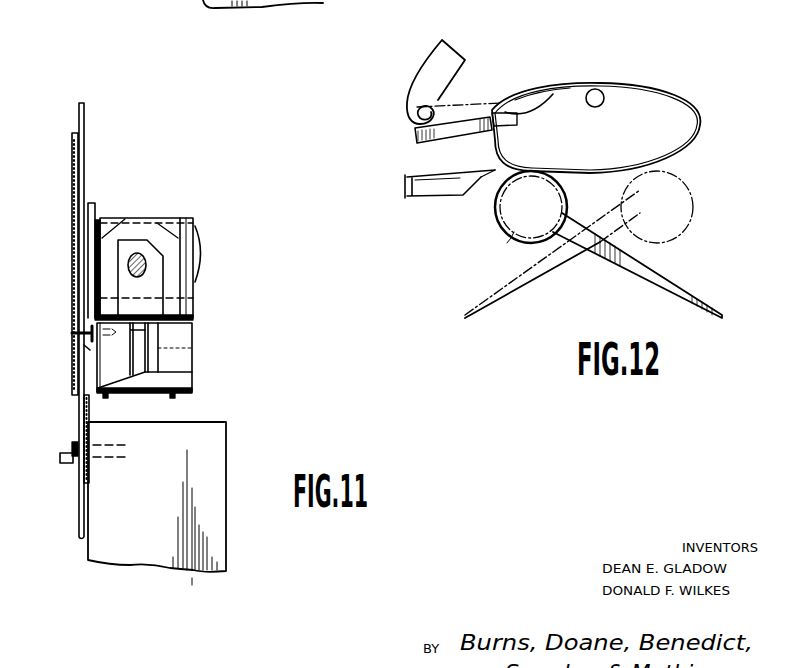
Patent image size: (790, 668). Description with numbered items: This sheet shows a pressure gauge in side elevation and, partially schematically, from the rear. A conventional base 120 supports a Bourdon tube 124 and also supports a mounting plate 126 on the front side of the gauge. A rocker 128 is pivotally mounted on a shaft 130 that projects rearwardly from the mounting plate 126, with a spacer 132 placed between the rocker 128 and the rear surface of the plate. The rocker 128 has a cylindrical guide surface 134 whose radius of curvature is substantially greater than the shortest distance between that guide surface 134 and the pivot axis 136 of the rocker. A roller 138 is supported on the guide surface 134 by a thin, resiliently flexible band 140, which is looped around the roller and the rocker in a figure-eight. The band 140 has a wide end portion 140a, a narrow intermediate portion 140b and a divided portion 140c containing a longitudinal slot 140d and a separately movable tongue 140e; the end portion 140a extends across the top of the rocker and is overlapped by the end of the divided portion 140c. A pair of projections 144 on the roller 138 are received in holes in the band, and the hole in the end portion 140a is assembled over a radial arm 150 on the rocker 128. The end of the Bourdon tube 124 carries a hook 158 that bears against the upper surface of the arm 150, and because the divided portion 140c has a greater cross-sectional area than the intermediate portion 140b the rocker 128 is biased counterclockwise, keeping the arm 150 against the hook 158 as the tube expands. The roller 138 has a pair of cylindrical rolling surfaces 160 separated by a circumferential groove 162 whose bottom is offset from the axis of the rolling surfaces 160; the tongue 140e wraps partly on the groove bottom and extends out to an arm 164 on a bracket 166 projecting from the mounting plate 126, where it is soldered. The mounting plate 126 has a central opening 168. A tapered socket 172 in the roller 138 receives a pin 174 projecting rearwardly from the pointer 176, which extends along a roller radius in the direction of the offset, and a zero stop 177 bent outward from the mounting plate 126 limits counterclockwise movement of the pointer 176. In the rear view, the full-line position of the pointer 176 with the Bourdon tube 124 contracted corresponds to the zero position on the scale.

In FIG. 11, the base 120 is at (215, 438).
In FIG. 12, the Bourdon tube 124 is at (457, 55).
In FIG. 11, the mounting plate 126 is at (90, 473).
In FIG. 11, the rocker 128 is at (187, 281).
In FIG. 12, the rocker 128 is at (563, 92).
In FIG. 11, the shaft 130 is at (198, 235).
In FIG. 12, the shaft 130 is at (582, 90).
In FIG. 11, the spacer 132 is at (93, 204).
In FIG. 11, the cylindrical guide surface 134 is at (194, 314).
In FIG. 12, the cylindrical guide surface 134 is at (667, 150).
In FIG. 12, the pivot axis 136 is at (602, 92).
In FIG. 11, the roller 138 is at (182, 373).
In FIG. 12, the roller 138 is at (546, 206).
In FIG. 11, the band 140 is at (123, 231).
In FIG. 11, the wide end portion 140a is at (157, 277).
In FIG. 11, the narrow intermediate portion 140b is at (153, 349).
In FIG. 11, the divided portion 140c is at (183, 291).
In FIG. 11, the longitudinal slot 140d is at (119, 355).
In FIG. 11, the tongue 140e is at (138, 331).
In FIG. 12, the tongue 140e is at (483, 182).
In FIG. 11, the projections 144 is at (107, 398).
In FIG. 11, the radial arm 150 is at (143, 254).
In FIG. 12, the radial arm 150 is at (450, 133).
In FIG. 12, the hook 158 is at (418, 118).
In FIG. 11, the cylindrical rolling surfaces 160 is at (102, 369).
In FIG. 12, the cylindrical rolling surfaces 160 is at (512, 239).
In FIG. 11, the circumferential groove 162 is at (138, 363).
In FIG. 12, the circumferential groove 162 is at (497, 213).
In FIG. 12, the arm 164 is at (405, 189).
In FIG. 12, the bracket 166 is at (425, 190).
In FIG. 11, the central opening 168 is at (82, 406).
In FIG. 11, the tapered socket 172 is at (90, 351).
In FIG. 11, the pin 174 is at (72, 335).
In FIG. 11, the pointer 176 is at (75, 187).
In FIG. 12, the pointer 176 is at (663, 280).
In FIG. 11, the zero stop 177 is at (67, 465).